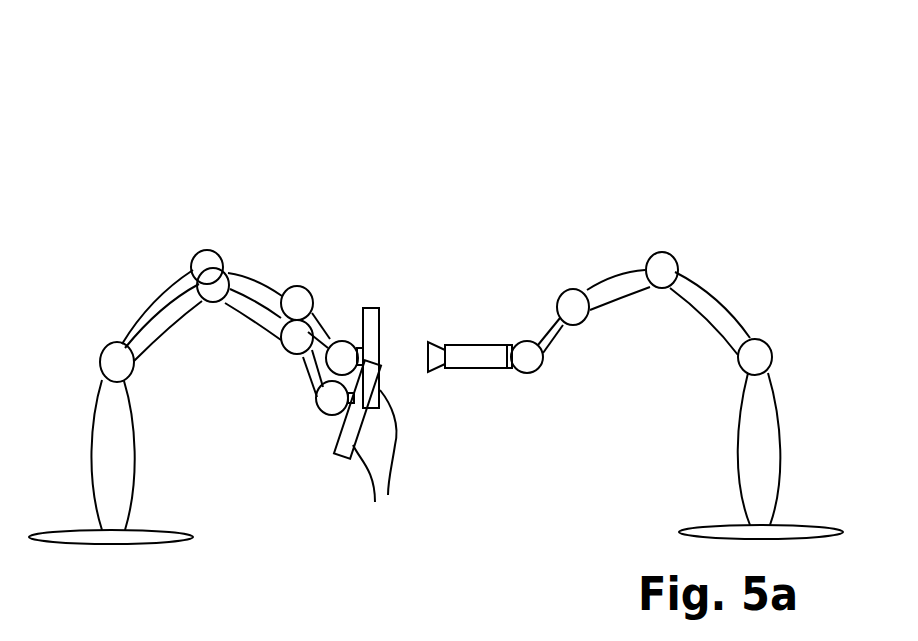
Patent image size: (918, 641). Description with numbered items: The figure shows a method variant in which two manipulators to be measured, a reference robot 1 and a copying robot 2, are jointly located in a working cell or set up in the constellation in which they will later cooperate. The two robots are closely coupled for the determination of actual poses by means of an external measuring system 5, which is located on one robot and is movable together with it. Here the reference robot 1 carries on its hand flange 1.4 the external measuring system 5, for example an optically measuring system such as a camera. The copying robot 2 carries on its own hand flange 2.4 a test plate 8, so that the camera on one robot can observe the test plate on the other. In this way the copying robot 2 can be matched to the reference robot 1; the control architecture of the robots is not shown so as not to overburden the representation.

The reference robot 1 is at (703, 198).
The hand flange 1.4 is at (508, 370).
The copying robot 2 is at (193, 203).
The hand flange 2.4 is at (356, 337).
The external measuring system 5 is at (468, 345).
The test plate 8 is at (366, 452).